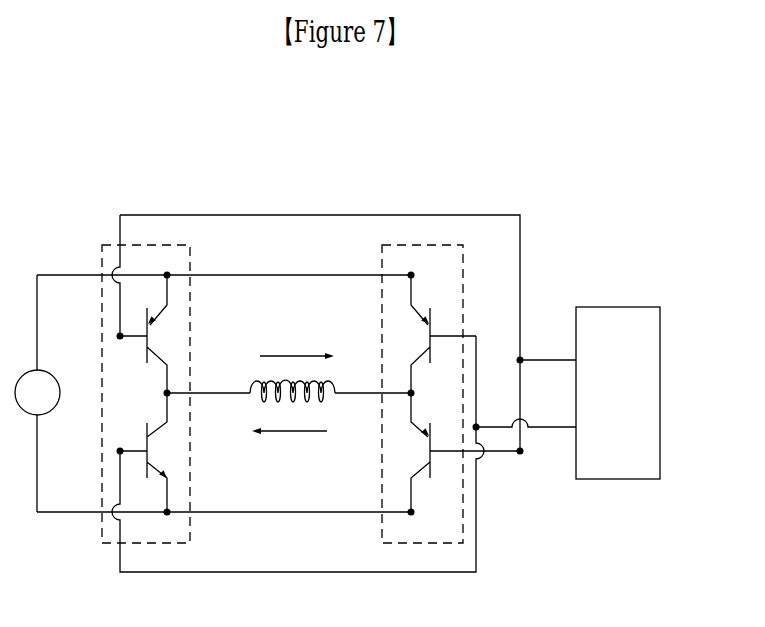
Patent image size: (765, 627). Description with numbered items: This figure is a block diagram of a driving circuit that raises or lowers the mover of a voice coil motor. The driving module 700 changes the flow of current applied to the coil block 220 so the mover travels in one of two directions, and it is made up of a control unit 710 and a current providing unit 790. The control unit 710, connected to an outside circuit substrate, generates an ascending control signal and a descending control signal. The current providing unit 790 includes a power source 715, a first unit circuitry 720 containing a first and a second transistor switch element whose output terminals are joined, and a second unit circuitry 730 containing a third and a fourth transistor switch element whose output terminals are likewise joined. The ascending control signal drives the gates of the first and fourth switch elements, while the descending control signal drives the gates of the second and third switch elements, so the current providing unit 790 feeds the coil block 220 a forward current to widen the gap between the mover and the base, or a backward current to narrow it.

The driving module 700 is at (272, 186).
The current providing unit 790 is at (201, 214).
The first unit circuitry 720 is at (160, 245).
The second unit circuitry 730 is at (408, 245).
The control unit 710 is at (612, 306).
The power source 715 is at (46, 374).
The coil block 220 is at (252, 374).